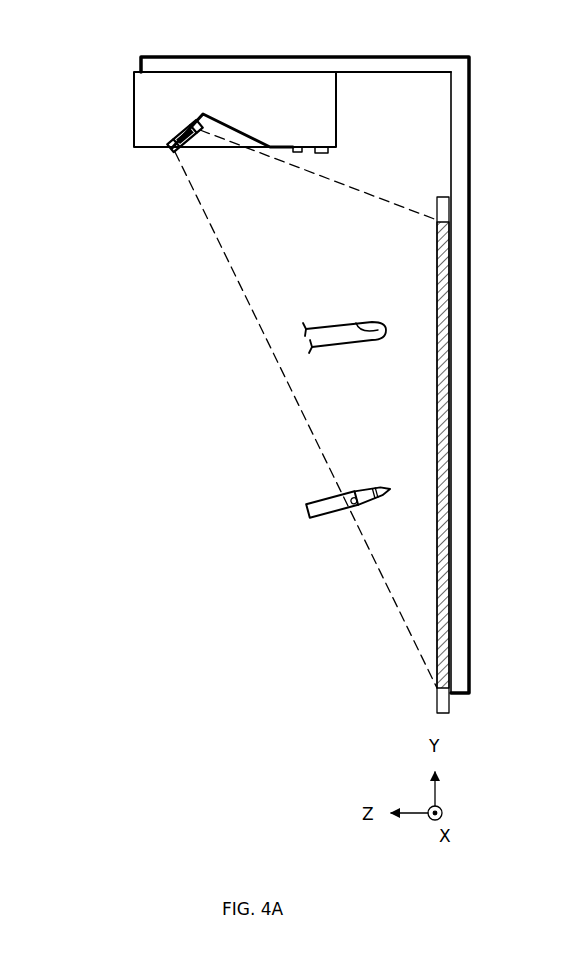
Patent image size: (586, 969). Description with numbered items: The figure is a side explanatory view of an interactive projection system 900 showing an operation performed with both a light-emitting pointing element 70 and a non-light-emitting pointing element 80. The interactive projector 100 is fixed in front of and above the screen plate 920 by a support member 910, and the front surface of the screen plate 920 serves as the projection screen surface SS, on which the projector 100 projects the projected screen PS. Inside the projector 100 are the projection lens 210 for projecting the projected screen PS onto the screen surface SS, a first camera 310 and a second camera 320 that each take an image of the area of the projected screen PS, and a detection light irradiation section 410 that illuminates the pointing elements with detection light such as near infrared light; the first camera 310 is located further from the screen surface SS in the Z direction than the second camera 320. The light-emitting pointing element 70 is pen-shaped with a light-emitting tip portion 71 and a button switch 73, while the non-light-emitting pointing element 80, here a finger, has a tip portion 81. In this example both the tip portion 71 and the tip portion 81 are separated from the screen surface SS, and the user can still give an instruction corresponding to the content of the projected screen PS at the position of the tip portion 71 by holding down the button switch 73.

The interactive projection system 900 is at (356, 353).
The support member 910 is at (468, 190).
The screen plate 920 is at (447, 206).
The interactive projector 100 is at (280, 88).
The projection lens 210 is at (260, 396).
The first camera 310 is at (170, 131).
The second camera 320 is at (328, 152).
The detection light irradiation section 410 is at (296, 151).
The non-light-emitting pointing element 80 is at (341, 333).
The tip portion 81 is at (385, 325).
The light-emitting pointing element 70 is at (320, 501).
The tip portion 71 is at (389, 487).
The button switch 73 is at (353, 500).
The projection screen surface SS is at (437, 205).
The projected screen PS is at (437, 310).